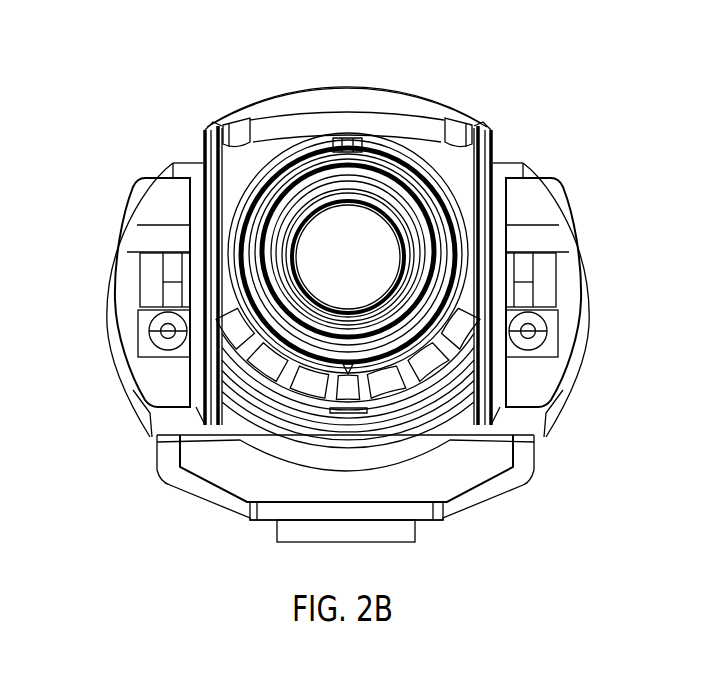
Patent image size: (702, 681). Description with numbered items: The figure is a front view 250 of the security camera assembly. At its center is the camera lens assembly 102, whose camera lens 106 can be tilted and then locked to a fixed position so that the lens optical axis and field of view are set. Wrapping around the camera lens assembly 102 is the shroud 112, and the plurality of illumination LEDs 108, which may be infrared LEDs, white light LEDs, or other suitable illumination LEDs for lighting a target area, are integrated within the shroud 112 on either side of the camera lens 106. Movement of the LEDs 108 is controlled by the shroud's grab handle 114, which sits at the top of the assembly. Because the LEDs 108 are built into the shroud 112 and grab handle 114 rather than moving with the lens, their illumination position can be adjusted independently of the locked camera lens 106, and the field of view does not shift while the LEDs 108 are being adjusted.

The front view 250 is at (86, 48).
The camera lens assembly 102 is at (473, 435).
The camera lens 106 is at (360, 262).
The illumination LEDs 108 is at (158, 292).
The shroud 112 is at (488, 158).
The grab handle 114 is at (420, 120).